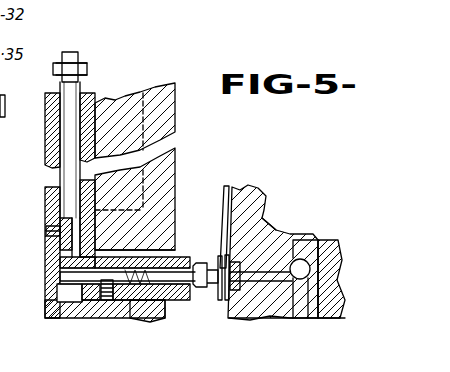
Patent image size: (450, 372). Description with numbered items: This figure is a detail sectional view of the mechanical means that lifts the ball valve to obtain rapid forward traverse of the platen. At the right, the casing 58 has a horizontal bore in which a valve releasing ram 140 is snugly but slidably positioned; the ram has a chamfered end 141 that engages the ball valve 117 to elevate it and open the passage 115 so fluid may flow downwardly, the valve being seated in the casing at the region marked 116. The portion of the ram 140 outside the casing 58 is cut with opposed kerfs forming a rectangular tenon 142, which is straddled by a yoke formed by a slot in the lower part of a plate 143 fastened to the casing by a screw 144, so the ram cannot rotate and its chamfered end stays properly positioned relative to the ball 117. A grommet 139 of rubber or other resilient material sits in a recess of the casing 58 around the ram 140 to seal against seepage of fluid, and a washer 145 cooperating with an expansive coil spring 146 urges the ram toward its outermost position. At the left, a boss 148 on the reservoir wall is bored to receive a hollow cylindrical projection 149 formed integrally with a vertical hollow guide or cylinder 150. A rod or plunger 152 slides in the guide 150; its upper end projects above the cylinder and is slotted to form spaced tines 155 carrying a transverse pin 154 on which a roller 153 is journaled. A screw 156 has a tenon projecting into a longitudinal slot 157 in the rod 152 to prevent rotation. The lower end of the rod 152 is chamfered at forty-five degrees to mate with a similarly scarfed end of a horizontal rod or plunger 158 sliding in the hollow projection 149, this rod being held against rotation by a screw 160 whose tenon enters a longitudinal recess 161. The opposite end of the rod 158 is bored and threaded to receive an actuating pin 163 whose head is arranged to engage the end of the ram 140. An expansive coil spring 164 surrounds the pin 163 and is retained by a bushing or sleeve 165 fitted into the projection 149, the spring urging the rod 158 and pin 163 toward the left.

The casing 58 is at (262, 185).
The passage 115 is at (343, 295).
The cam plate edge 116 is at (322, 238).
The ball valve 117 is at (305, 266).
The grommet 139 is at (282, 238).
The ram 140 is at (255, 318).
The chamfered end 141 is at (272, 298).
The rectangular tenon 142 is at (222, 300).
The plate 143 is at (228, 246).
The screw 144 is at (235, 190).
The washer 145 is at (238, 312).
The expansive coil spring 146 is at (272, 212).
The boss 148 is at (178, 198).
The hollow cylindrical projection 149 is at (190, 250).
The guide 150 is at (50, 132).
The rod 152 is at (48, 165).
The roller 153 is at (72, 58).
The transverse pin 154 is at (88, 69).
The tines 155 is at (56, 60).
The screw 156 is at (50, 252).
The longitudinal slot 157 is at (54, 220).
The rod 158 is at (46, 312).
The screw 160 is at (106, 318).
The longitudinal recess 161 is at (66, 320).
The actuating pin 163 is at (205, 290).
The expansive coil spring 164 is at (148, 320).
The bushing 165 is at (185, 300).